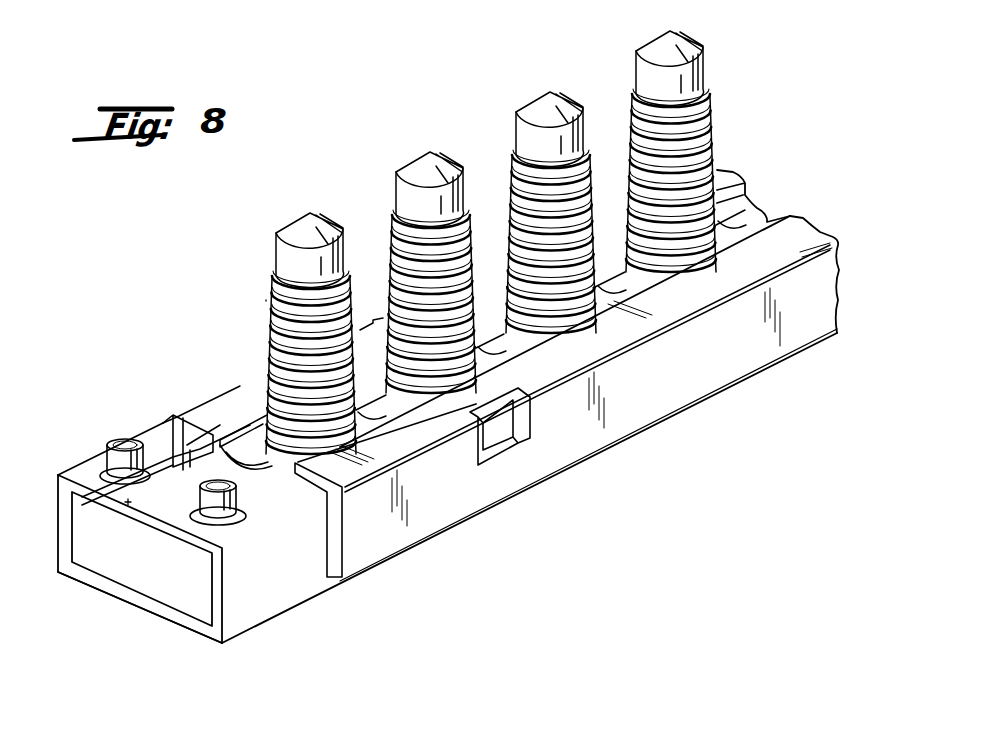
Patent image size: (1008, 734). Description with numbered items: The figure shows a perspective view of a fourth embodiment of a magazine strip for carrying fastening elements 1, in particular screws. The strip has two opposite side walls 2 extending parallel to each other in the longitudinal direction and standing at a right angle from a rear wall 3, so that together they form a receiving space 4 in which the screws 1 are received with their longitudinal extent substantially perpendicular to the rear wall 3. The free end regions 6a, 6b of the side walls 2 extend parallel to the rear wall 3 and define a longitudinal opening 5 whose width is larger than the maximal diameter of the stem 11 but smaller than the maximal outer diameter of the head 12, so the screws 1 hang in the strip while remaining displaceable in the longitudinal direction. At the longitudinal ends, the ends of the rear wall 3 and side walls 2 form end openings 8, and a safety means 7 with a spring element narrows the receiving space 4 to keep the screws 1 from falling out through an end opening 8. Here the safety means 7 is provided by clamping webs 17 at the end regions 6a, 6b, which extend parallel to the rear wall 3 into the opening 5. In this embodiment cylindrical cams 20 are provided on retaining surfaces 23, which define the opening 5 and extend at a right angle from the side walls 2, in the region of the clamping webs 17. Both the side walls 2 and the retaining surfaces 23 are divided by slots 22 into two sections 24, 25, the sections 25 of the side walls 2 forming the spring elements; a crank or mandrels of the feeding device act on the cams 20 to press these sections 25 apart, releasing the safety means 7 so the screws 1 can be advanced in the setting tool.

The fastening element 1 is at (272, 252).
The side wall 2 is at (563, 438).
The rear wall 3 is at (140, 578).
The receiving space 4 is at (184, 578).
The opening 5 is at (172, 457).
The end region 6a is at (252, 372).
The end region 6b is at (405, 414).
The safety means 7 is at (306, 630).
The end opening 8 is at (96, 569).
The stem 11 is at (252, 316).
The head 12 is at (258, 430).
The clamping web 17 is at (173, 507).
The cylindrical cam 20 is at (118, 437).
The slot 22 is at (205, 417).
The retaining surface 23 is at (688, 293).
The section 24 is at (250, 362).
The section 25 is at (88, 455).